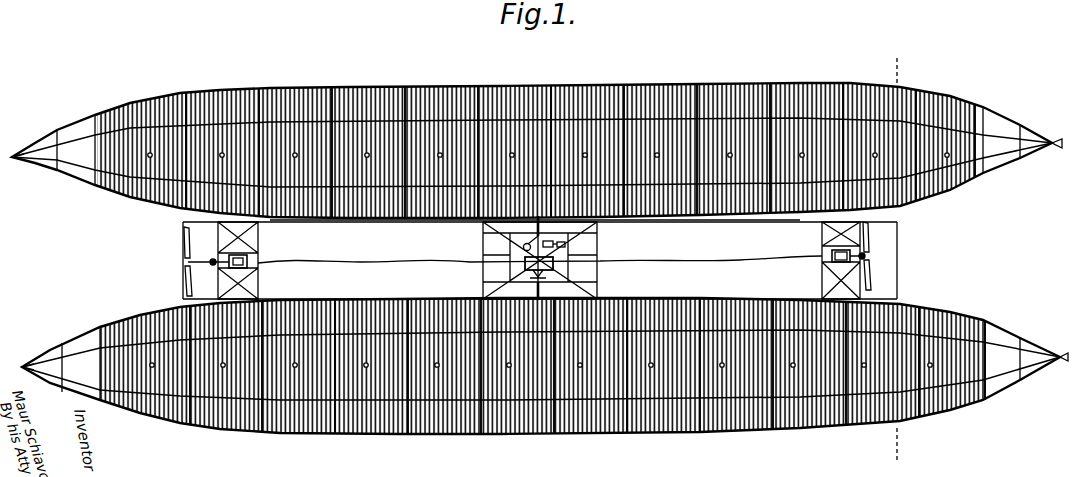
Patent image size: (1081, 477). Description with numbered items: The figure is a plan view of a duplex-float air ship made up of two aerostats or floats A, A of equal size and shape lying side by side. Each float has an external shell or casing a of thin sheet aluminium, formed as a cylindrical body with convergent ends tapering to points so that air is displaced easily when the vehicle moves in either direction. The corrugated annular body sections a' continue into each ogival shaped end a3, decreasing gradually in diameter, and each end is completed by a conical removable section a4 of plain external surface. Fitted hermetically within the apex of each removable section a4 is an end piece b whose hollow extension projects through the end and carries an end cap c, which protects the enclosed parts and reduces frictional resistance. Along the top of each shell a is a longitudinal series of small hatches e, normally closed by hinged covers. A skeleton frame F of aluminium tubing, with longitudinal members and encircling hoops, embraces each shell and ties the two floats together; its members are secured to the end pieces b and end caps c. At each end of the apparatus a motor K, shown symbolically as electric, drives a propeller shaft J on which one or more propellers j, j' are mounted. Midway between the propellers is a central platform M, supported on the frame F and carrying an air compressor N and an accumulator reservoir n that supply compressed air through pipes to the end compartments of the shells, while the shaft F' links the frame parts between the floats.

The aerostat or float A is at (536, 258).
The annular body section a' is at (536, 228).
The ogival shaped end a3 is at (540, 242).
The conical removable section a4 is at (535, 253).
The end cap c is at (540, 253).
The hatch e is at (512, 152).
The end piece b is at (895, 260).
The skeleton frame F is at (575, 324).
The shaft F' is at (540, 276).
The motor K is at (240, 267).
The propeller shaft J is at (535, 259).
The propeller j is at (534, 278).
The propeller blade j' is at (532, 240).
The accumulator reservoir n is at (522, 248).
The air compressor N is at (565, 245).
The central platform M is at (556, 268).
The external shell or casing a is at (535, 224).